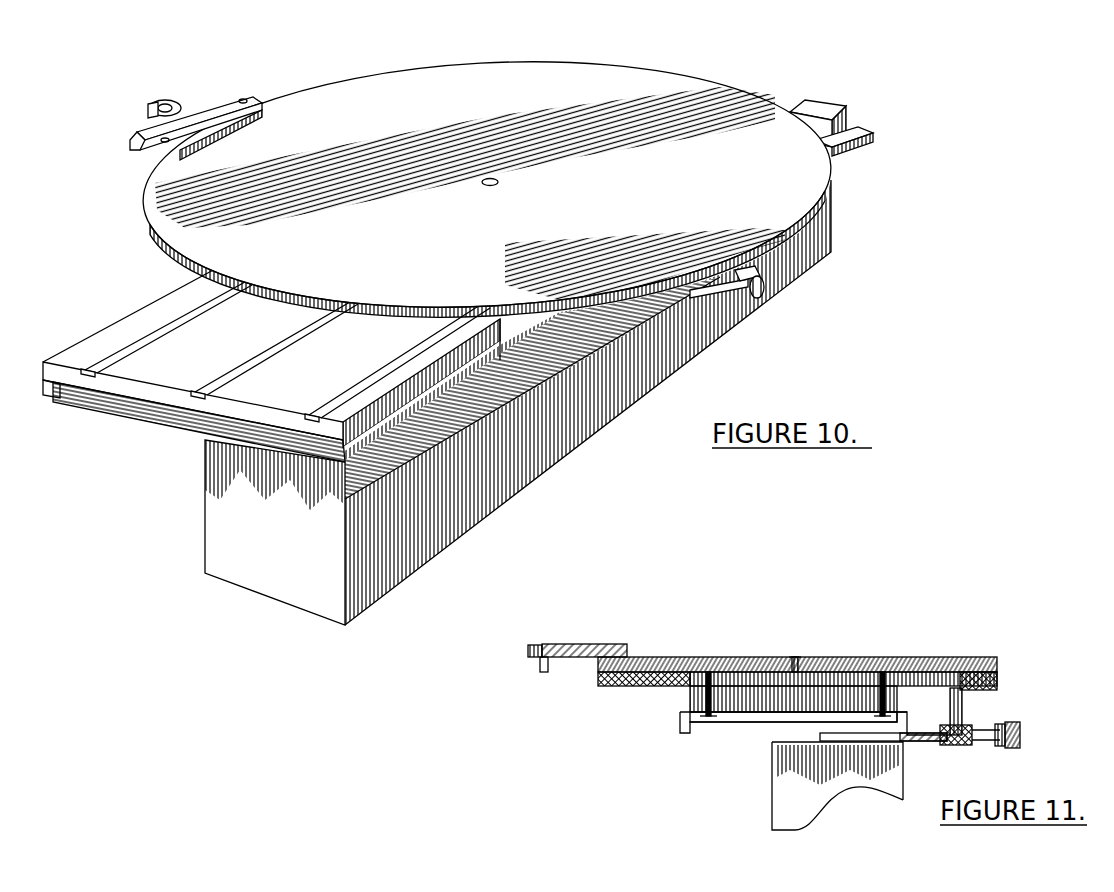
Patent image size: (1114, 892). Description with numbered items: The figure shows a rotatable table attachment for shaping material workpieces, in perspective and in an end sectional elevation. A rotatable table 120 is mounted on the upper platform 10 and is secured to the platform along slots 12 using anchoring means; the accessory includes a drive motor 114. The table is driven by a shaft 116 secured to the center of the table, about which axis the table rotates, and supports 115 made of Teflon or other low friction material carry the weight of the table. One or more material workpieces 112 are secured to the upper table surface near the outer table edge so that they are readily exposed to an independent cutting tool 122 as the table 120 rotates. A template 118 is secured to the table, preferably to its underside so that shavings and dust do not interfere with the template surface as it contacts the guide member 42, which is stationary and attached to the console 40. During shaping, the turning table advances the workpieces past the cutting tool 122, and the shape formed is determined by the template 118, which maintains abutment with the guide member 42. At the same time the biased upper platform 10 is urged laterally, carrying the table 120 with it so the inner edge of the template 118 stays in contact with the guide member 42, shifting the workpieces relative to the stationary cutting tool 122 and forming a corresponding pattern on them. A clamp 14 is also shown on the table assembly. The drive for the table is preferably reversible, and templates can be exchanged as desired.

In FIG. 10, the upper platform 10 is at (822, 108).
In FIG. 11, the upper platform 10 is at (727, 732).
In FIG. 11, the slots 12 is at (790, 720).
In FIG. 10, the clamp 14 is at (762, 300).
In FIG. 10, the console 40 is at (560, 410).
In FIG. 11, the console 40 is at (880, 774).
In FIG. 11, the guide member 42 is at (962, 688).
In FIG. 10, the material workpiece 112 is at (222, 98).
In FIG. 11, the material workpiece 112 is at (584, 645).
In FIG. 11, the drive motor 114 is at (693, 694).
In FIG. 11, the supports 115 is at (712, 660).
In FIG. 11, the shaft 116 is at (795, 657).
In FIG. 11, the template 118 is at (992, 680).
In FIG. 10, the rotatable table 120 is at (556, 62).
In FIG. 11, the rotatable table 120 is at (896, 657).
In FIG. 10, the cutting tool 122 is at (168, 98).
In FIG. 11, the cutting tool 122 is at (540, 646).